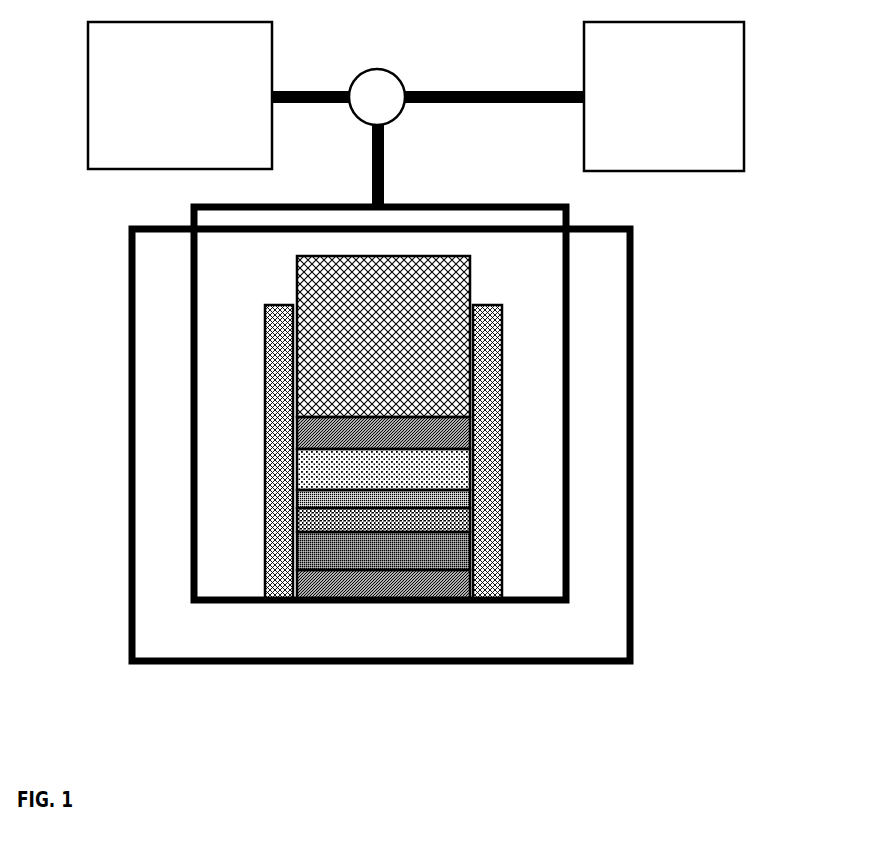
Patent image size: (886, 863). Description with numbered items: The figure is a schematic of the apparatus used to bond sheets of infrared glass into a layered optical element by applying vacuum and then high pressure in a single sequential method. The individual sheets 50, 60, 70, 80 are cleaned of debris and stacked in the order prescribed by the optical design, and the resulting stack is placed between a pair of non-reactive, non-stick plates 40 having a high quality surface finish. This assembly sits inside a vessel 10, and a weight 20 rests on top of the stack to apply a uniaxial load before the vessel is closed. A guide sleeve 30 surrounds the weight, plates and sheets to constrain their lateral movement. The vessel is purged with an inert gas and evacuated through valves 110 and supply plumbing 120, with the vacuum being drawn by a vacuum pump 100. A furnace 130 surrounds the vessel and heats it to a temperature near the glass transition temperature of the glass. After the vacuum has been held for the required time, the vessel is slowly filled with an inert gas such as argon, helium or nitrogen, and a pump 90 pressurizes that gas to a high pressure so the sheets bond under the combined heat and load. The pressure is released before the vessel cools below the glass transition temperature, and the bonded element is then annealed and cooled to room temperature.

The vessel 10 is at (575, 277).
The weight 20 is at (440, 250).
The guide sleeve 30 is at (505, 378).
The plates 40 is at (300, 580).
The sheet 50 is at (460, 478).
The sheet 60 is at (455, 500).
The sheet 70 is at (455, 516).
The sheet 80 is at (455, 552).
The pump 90 is at (142, 172).
The vacuum pump 100 is at (704, 176).
The valves 110 is at (396, 122).
The supply plumbing 120 is at (463, 84).
The furnace 130 is at (123, 366).